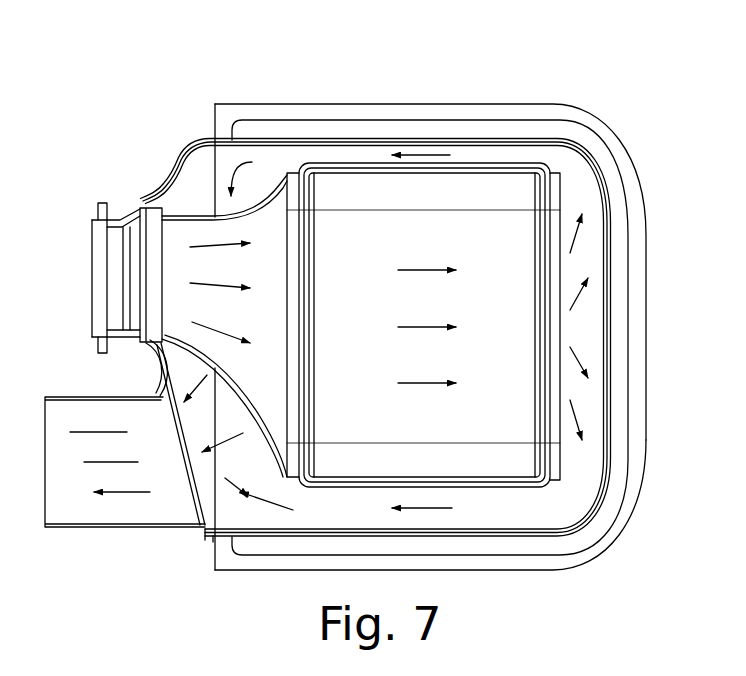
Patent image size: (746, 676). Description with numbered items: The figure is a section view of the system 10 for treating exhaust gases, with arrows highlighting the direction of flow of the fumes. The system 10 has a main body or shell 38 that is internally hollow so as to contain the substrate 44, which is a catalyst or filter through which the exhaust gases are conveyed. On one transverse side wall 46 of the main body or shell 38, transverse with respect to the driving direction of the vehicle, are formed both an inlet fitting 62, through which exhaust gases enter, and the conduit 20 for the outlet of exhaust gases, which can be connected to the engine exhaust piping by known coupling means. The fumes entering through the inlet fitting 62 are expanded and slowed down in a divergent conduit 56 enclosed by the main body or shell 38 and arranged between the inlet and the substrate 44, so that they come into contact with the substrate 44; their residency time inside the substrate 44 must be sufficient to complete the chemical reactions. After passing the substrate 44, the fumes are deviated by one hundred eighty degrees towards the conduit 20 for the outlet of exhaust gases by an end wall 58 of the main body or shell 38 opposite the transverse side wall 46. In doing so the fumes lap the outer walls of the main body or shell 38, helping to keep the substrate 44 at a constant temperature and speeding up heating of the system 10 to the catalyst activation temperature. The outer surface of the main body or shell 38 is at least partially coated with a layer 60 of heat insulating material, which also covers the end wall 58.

The system for treating exhaust gases 10 is at (233, 574).
The conduit for the outlet of exhaust gases 20 is at (87, 530).
The main body or shell 38 is at (576, 102).
The substrate 44 is at (510, 200).
The transverse side wall 46 is at (157, 375).
The divergent conduit 56 is at (198, 233).
The end wall 58 is at (607, 378).
The layer of heat insulating material 60 is at (522, 567).
The inlet fitting 62 is at (122, 220).